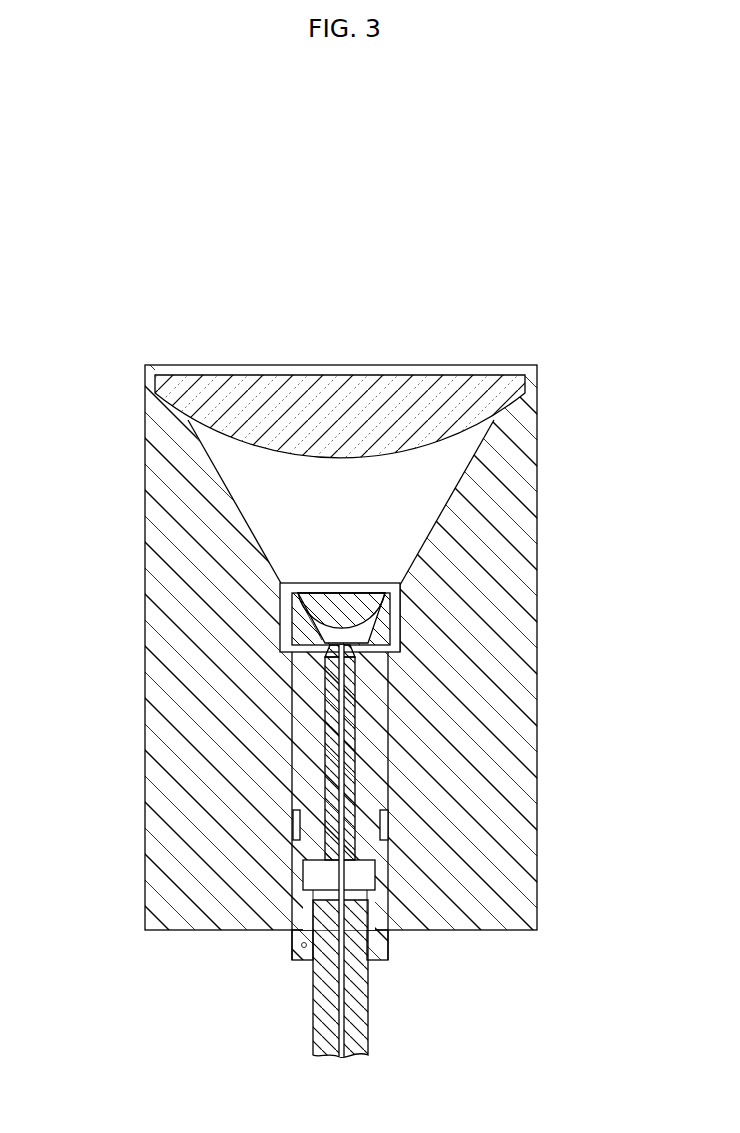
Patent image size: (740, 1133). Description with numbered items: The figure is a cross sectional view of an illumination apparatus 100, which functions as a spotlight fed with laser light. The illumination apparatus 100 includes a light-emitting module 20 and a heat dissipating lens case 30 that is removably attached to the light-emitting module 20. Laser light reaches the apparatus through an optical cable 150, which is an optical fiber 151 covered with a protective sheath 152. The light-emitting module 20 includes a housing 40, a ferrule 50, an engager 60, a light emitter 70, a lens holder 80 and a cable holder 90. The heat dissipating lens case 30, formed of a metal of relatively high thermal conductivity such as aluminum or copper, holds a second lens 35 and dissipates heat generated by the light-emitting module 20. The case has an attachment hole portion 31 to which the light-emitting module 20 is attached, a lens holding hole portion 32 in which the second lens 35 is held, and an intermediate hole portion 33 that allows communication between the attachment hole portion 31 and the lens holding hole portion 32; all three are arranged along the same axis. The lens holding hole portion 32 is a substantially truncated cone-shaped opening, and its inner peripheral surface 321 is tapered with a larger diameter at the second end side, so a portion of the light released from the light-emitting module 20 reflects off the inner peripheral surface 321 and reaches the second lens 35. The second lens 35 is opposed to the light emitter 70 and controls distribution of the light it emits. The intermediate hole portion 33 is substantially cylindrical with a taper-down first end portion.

The illumination apparatus 100 is at (512, 286).
The heat dissipating lens case 30 is at (128, 737).
The attachment hole portion 31 is at (390, 822).
The lens holding hole portion 32 is at (432, 490).
The inner peripheral surface 321 is at (437, 529).
The intermediate hole portion 33 is at (398, 602).
The second lens 35 is at (500, 401).
The lens holder 80 is at (283, 590).
The light emitter 70 is at (304, 626).
The ferrule 50 is at (324, 690).
The housing 40 is at (298, 780).
The engager 60 is at (296, 835).
The light-emitting module 20 is at (278, 957).
The cable holder 90 is at (300, 930).
The optical fiber 151 is at (378, 873).
The protective sheath 152 is at (312, 1004).
The optical cable 150 is at (380, 1040).